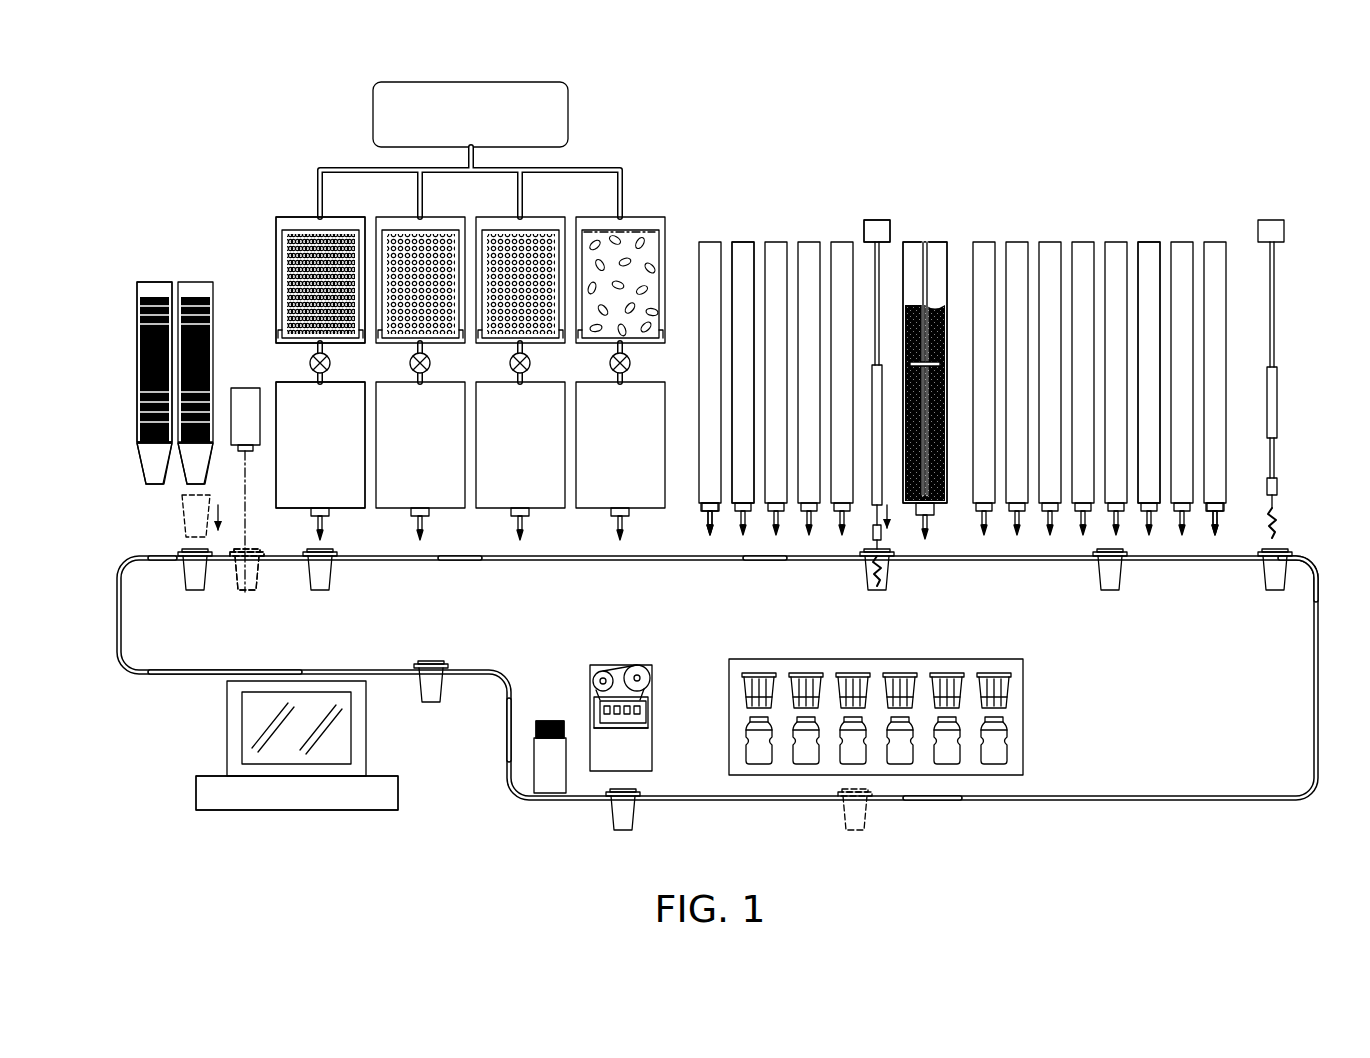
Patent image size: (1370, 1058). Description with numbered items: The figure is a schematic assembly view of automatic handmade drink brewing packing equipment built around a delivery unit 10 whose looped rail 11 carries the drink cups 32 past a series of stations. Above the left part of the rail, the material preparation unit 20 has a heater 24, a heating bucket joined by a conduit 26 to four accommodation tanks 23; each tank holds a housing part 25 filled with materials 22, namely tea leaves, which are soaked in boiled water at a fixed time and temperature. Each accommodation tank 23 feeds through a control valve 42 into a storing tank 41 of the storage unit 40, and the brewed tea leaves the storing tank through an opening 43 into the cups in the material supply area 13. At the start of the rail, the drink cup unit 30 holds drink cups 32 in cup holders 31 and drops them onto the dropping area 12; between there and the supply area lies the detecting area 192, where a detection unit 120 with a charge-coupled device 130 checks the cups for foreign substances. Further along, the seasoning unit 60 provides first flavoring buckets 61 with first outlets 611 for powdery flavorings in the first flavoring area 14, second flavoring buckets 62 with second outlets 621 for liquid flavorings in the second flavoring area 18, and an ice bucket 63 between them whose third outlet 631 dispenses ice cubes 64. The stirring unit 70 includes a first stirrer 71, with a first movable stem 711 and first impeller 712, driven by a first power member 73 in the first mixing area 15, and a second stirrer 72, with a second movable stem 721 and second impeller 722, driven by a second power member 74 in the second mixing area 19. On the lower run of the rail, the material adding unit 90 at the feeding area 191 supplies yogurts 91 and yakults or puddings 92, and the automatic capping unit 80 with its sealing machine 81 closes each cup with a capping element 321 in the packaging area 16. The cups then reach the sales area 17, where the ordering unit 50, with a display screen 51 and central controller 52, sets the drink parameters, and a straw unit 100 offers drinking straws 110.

The delivery unit 10 is at (122, 552).
The rail 11 is at (138, 676).
The dropping area 12 is at (163, 558).
The material supply area 13 is at (460, 558).
The first flavoring area 14 is at (765, 558).
The first mixing area 15 is at (893, 566).
The packaging area 16 is at (638, 800).
The sales area 17 is at (506, 731).
The second flavoring area 18 is at (1092, 558).
The second mixing area 19 is at (1300, 563).
The feeding area 191 is at (930, 801).
The detecting area 192 is at (232, 558).
The material preparation unit 20 is at (300, 192).
The materials 22 is at (642, 235).
The accommodation tanks 23 is at (288, 225).
The heater 24 is at (560, 120).
The housing parts 25 is at (296, 262).
The conduit 26 is at (322, 168).
The drink cup unit 30 is at (130, 313).
The cup holders 31 is at (148, 285).
The drink cups 32 is at (145, 454).
The capping element 321 is at (431, 660).
The storage unit 40 is at (478, 520).
The storing tanks 41 is at (306, 461).
The control valves 42 is at (330, 362).
The opening 43 is at (326, 525).
The ordering unit 50 is at (228, 802).
The display screen 51 is at (340, 728).
The central controller 52 is at (378, 811).
The seasoning unit 60 is at (1044, 213).
The first flavoring buckets 61 is at (748, 242).
The first outlet 611 is at (706, 520).
The second flavoring buckets 62 is at (1147, 242).
The second outlet 621 is at (1212, 521).
The ice bucket 63 is at (930, 242).
The third outlet 631 is at (928, 521).
The ice cubes 64 is at (930, 325).
The stirring unit 70 is at (898, 187).
The first stirrer 71 is at (870, 292).
The first movable stem 711 is at (876, 500).
The first impeller 712 is at (877, 572).
The second stirrer 72 is at (1280, 395).
The second movable stem 721 is at (1275, 455).
The second impeller 722 is at (1276, 520).
The first power member 73 is at (876, 228).
The second power member 74 is at (1272, 225).
The automatic capping unit 80 is at (614, 664).
The sealing machine 81 is at (632, 712).
The material adding unit 90 is at (1005, 656).
The yogurts 91 is at (1010, 750).
The yakults and puddings 92 is at (1012, 688).
The straw unit 100 is at (552, 797).
The drinking straws 110 is at (548, 722).
The detection unit 120 is at (245, 383).
The charge-coupled device 130 is at (252, 455).